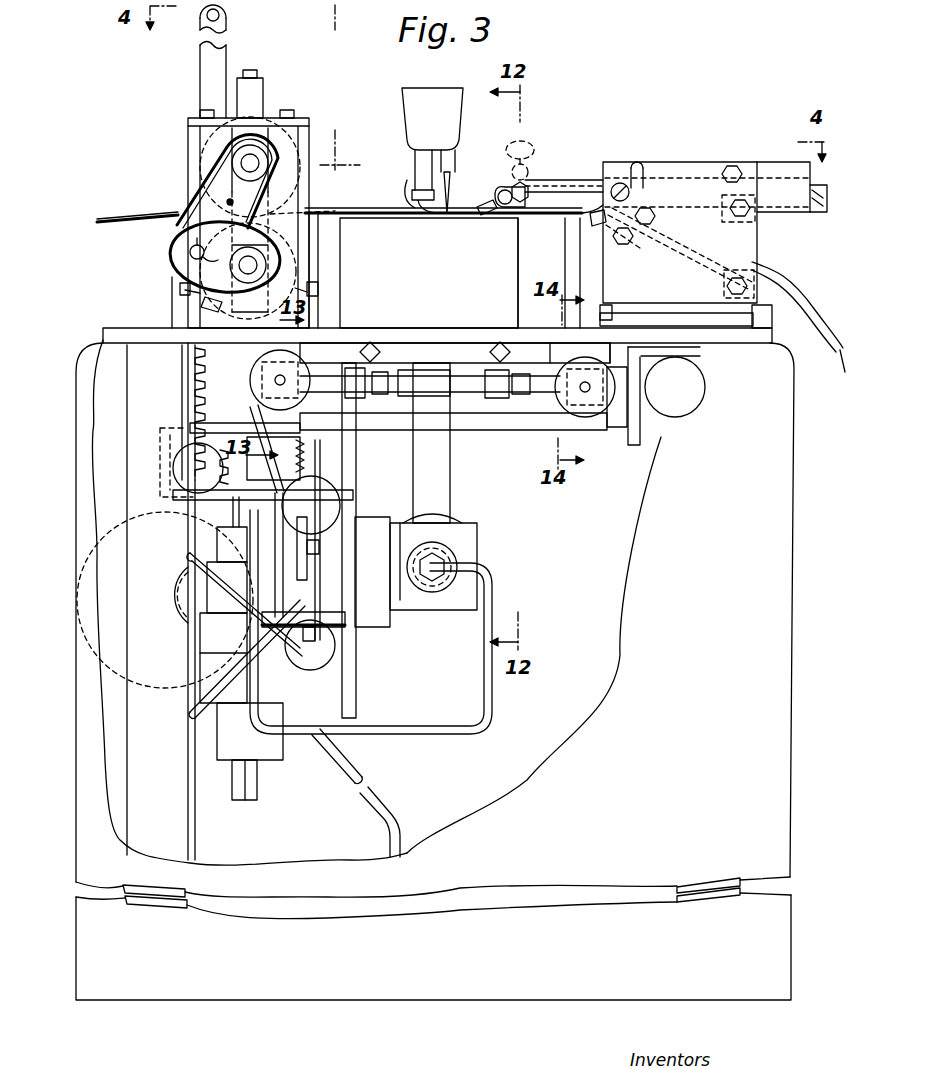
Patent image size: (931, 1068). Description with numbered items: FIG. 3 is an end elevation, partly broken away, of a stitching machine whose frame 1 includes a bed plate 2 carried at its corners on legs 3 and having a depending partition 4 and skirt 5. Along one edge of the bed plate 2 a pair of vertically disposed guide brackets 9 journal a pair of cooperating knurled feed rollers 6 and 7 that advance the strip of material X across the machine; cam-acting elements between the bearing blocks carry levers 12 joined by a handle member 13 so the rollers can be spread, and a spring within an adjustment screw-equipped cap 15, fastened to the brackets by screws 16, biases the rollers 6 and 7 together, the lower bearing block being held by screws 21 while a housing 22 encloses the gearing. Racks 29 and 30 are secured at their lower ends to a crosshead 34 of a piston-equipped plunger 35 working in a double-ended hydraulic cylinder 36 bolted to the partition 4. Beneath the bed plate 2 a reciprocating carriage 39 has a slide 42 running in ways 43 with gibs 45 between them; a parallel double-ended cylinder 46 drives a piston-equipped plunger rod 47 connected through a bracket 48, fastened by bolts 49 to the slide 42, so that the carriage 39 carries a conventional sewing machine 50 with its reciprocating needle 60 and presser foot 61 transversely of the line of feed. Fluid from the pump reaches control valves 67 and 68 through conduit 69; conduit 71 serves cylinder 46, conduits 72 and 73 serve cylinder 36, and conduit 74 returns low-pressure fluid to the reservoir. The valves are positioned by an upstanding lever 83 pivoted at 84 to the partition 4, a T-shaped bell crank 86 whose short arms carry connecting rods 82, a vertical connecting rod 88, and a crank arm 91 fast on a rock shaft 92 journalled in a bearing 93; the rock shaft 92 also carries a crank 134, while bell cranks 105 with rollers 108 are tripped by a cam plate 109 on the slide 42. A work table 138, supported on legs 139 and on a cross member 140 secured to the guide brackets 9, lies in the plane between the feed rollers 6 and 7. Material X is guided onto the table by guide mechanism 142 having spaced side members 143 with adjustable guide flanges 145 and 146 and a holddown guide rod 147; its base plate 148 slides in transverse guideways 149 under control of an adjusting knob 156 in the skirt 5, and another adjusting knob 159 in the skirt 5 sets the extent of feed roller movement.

The frame 1 is at (772, 536).
The bed plate 2 is at (113, 327).
The legs 3 is at (170, 838).
The partition 4 is at (352, 688).
The skirt 5 is at (620, 603).
The feed roller 6 is at (298, 178).
The feed roller 7 is at (237, 316).
The guide brackets 9 is at (305, 141).
The levers 12 is at (205, 36).
The handle member 13 is at (228, 15).
The adjustment screw-equipped cap 15 is at (256, 95).
The screws 16 is at (205, 110).
The screws 21 is at (184, 291).
The housing 22 is at (207, 193).
The rack 29 is at (195, 380).
The rack 30 is at (292, 450).
The crosshead 34 is at (240, 488).
The piston-equipped plunger 35 is at (240, 517).
The double-ended hydraulic cylinder 36 is at (222, 732).
The reciprocating carriage 39 is at (448, 280).
The slide 42 is at (430, 348).
The ways 43 is at (530, 350).
The gibs 45 is at (370, 346).
The double-ended cylinder 46 is at (470, 536).
The piston-equipped plunger rod 47 is at (450, 567).
The bracket 48 is at (443, 496).
The bolts 49 is at (456, 390).
The sewing machine 50 is at (442, 120).
The sewing needle 60 is at (450, 195).
The presser foot 61 is at (400, 187).
The control valve 67 is at (332, 482).
The control valve 68 is at (322, 642).
The conduit 69 is at (210, 430).
The conduit 71 is at (395, 730).
The conduit 72 is at (190, 560).
The conduit 73 is at (220, 670).
The conduit 74 is at (370, 800).
The connecting rods 82 is at (322, 590).
The lever 83 is at (255, 416).
The pivot 84 is at (347, 636).
The T-shaped bell crank 86 is at (330, 563).
The connecting rod 88 is at (318, 497).
The crank arm 91 is at (332, 448).
The rock shaft 92 is at (474, 432).
The bearing 93 is at (634, 445).
The bell crank 105 is at (370, 388).
The rollers 108 is at (498, 396).
The cam plate 109 is at (386, 376).
The crank 134 is at (606, 418).
The work table 138 is at (562, 269).
The legs 139 is at (573, 250).
The cross member 140 is at (322, 250).
The guide mechanism 142 is at (658, 160).
The side members 143 is at (693, 172).
The guide flange 145 is at (820, 216).
The guide flange 146 is at (785, 294).
The adjustable guide rod 147 is at (478, 218).
The base plate 148 is at (727, 326).
The guideways 149 is at (607, 309).
The adjusting knob 156 is at (697, 393).
The adjusting knob 159 is at (270, 380).
The strip of material X is at (214, 208).